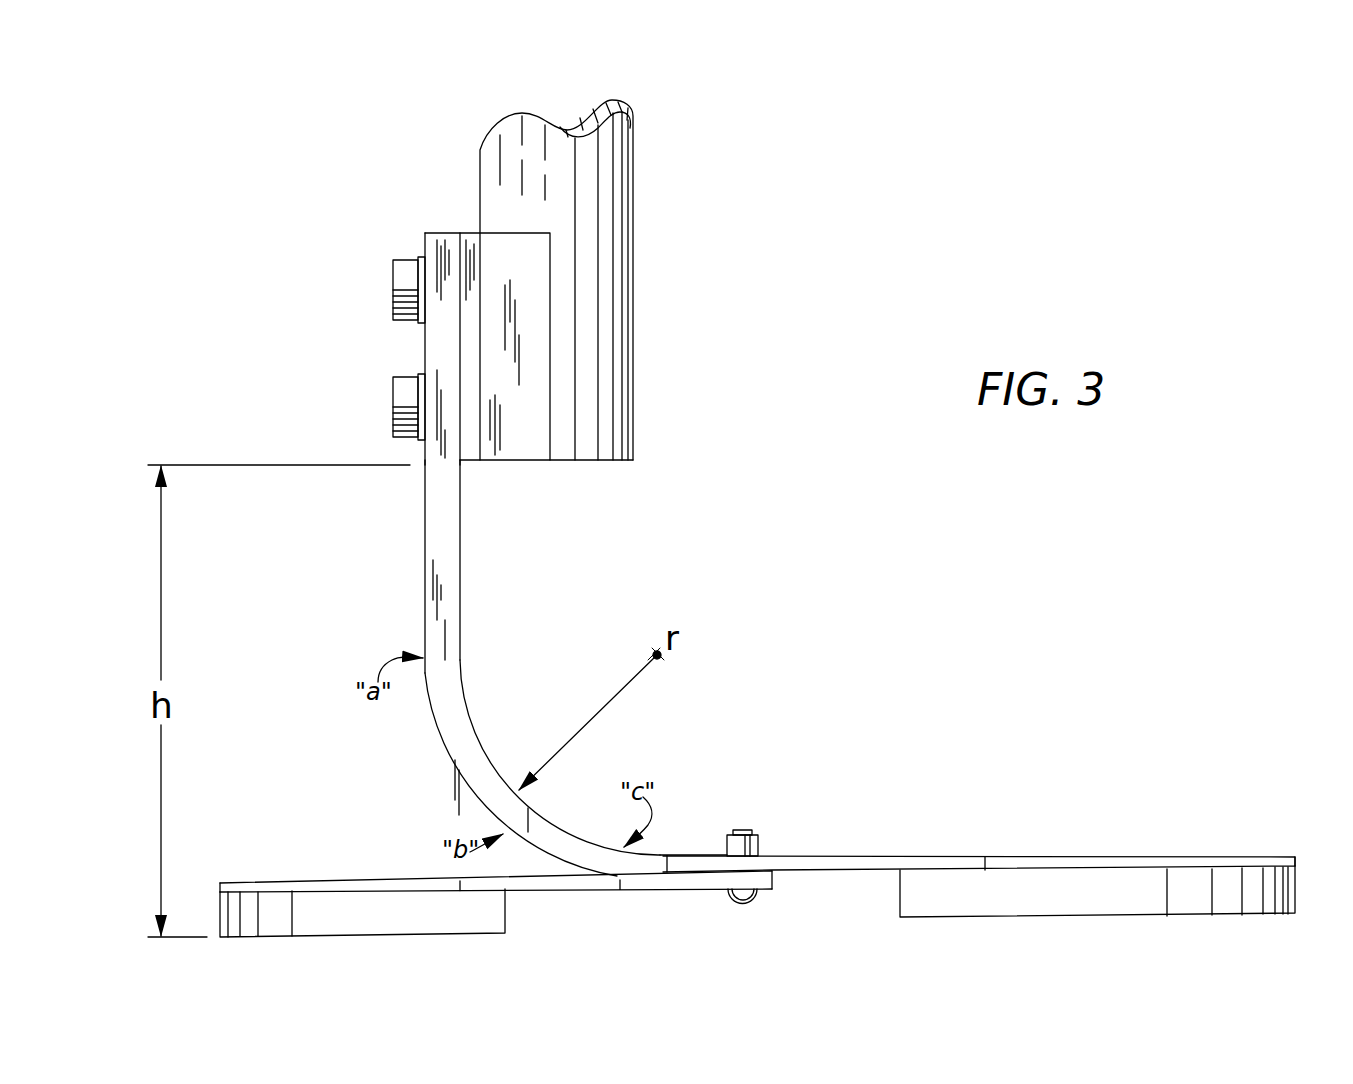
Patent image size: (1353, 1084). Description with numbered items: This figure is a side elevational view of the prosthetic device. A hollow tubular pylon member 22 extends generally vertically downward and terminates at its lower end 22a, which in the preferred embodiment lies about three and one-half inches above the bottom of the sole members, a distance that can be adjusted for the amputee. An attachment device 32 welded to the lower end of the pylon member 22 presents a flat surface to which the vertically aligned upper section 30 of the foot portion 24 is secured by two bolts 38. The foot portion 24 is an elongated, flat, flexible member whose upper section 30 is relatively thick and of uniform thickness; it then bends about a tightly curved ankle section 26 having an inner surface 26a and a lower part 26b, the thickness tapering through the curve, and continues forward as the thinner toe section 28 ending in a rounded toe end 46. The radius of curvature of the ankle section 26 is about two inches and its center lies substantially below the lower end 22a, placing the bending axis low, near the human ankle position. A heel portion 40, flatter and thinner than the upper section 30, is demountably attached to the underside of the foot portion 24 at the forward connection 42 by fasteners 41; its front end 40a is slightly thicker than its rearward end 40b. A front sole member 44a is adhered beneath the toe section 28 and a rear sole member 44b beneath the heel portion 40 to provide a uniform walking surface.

The pylon member 22 is at (633, 356).
The lower end of the pylon member 22a is at (560, 462).
The foot portion 24 is at (423, 570).
The ankle section 26 is at (460, 791).
The inner surface of the ankle section 26a is at (470, 714).
The lower part of the ankle section 26b is at (665, 852).
The toe section 28 is at (1105, 857).
The upper section of the foot portion 30 is at (425, 350).
The attachment device 32 is at (538, 294).
The bolts 38 is at (393, 282).
The heel portion 40 is at (381, 878).
The front end of the heel portion 40a is at (778, 888).
The rearward end of the heel portion 40b is at (220, 882).
The fasteners 41 is at (764, 834).
The forward connection 42 is at (755, 826).
The front sole member 44a is at (900, 917).
The rear sole member 44b is at (506, 935).
The toe end 46 is at (1295, 857).